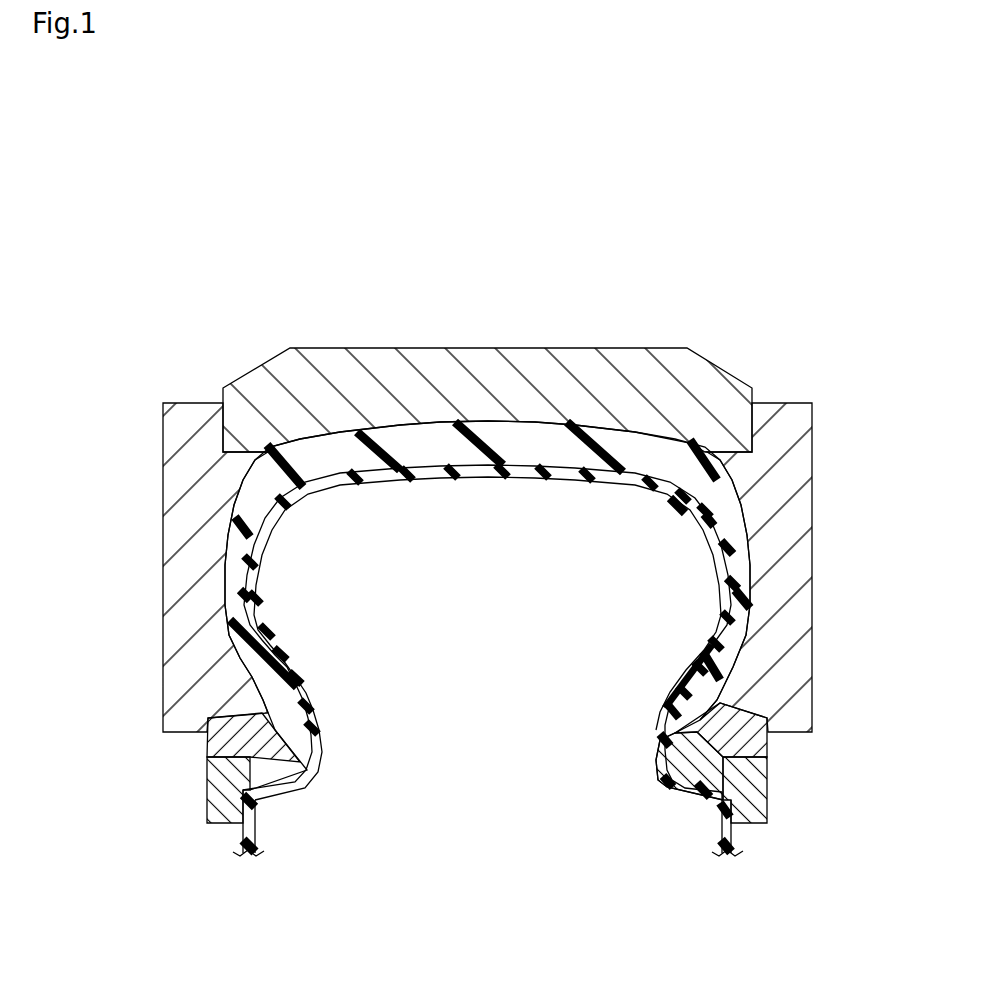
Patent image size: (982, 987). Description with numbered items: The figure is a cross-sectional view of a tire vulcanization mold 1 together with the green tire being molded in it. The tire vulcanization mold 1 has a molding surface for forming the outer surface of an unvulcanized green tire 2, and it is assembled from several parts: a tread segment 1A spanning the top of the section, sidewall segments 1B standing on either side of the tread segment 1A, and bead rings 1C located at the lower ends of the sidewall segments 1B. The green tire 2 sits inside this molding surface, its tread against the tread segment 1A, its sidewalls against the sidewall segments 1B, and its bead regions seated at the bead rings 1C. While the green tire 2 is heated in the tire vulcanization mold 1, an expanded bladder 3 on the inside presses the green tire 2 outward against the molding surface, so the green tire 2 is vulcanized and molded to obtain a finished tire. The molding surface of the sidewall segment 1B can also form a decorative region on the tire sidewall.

The tire vulcanization mold 1 is at (487, 556).
The tread segment 1A is at (398, 387).
The sidewall segment 1B is at (195, 565).
The bead ring 1C is at (200, 781).
The green tire 2 is at (530, 448).
The bladder 3 is at (468, 479).